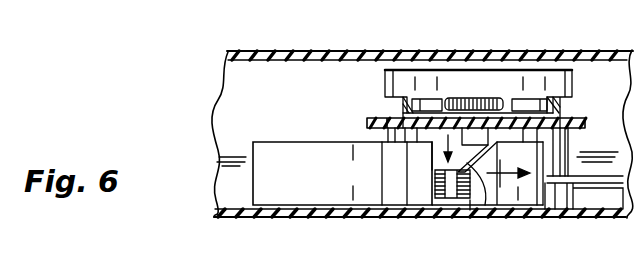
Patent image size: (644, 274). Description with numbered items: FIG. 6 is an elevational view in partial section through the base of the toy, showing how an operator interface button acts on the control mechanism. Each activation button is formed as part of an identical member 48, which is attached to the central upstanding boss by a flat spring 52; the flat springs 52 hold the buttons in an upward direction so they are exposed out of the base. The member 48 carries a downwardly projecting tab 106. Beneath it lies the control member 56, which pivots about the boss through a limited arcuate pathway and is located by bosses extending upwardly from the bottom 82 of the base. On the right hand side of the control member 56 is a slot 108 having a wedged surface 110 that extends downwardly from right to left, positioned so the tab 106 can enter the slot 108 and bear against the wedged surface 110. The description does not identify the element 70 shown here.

The tubular housing 70 is at (122, 1).
The member 48 is at (585, 118).
The flat springs 52 is at (490, 100).
The downwardly projecting tab 106 is at (465, 141).
The slot 108 is at (455, 156).
The control member 56 is at (452, 207).
The wedged surface 110 is at (480, 211).
The bottom 82 is at (610, 218).